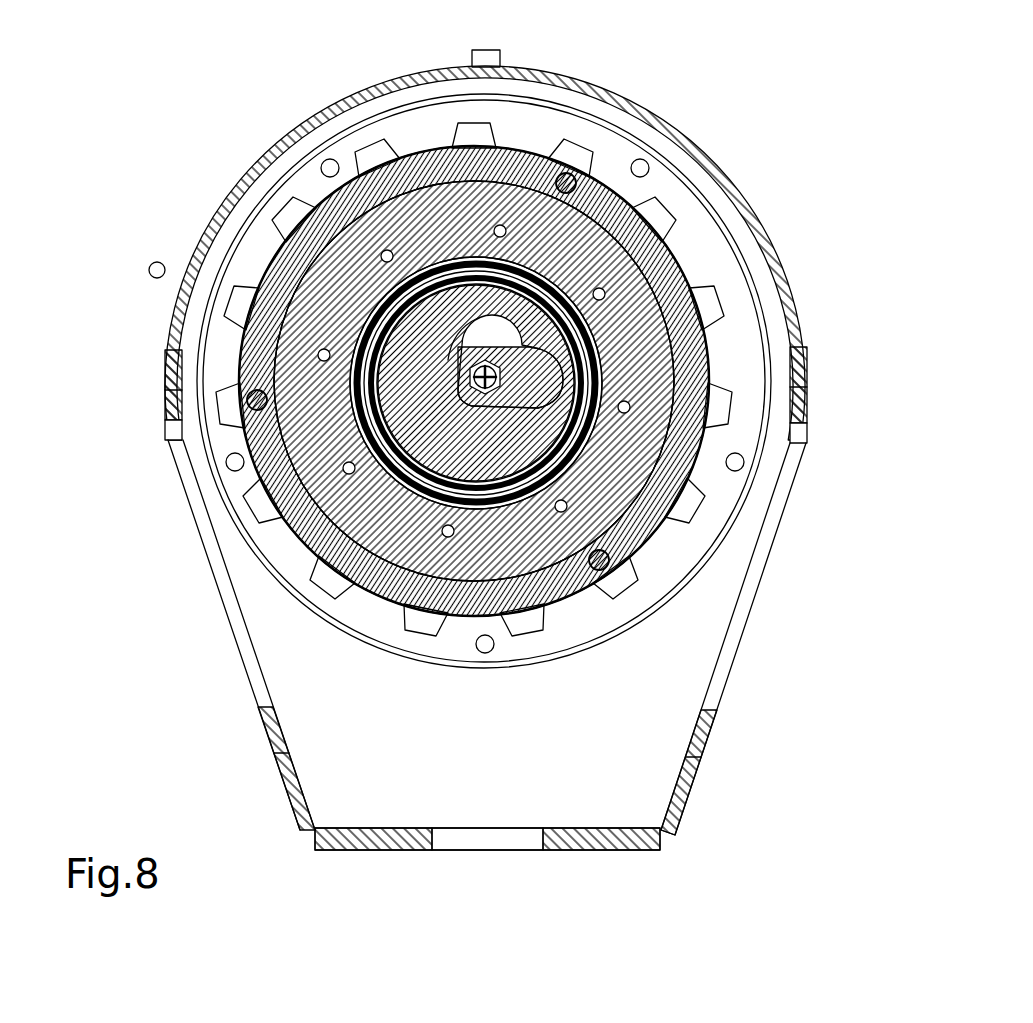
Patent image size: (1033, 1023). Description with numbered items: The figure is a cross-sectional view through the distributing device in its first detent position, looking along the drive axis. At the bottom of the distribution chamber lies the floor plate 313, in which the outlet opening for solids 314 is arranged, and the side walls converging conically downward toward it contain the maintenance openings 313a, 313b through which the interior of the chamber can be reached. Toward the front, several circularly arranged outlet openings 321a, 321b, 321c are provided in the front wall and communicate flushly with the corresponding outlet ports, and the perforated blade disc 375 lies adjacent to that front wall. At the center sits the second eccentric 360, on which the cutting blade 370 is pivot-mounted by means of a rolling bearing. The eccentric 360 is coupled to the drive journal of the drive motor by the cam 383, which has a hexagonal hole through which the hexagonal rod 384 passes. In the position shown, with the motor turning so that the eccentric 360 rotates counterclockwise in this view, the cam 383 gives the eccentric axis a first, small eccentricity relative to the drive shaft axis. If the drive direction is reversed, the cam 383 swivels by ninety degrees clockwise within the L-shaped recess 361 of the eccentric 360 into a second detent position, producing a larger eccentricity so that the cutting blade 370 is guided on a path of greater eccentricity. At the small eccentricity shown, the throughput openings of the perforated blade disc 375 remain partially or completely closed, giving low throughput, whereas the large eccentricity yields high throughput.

The cutting blade 370 is at (512, 165).
The cam 383 is at (497, 312).
The L-shaped recess 361 is at (482, 350).
The hexagonal rod 384 is at (479, 332).
The second eccentric 360 is at (412, 402).
The perforated blade disc 375 is at (703, 247).
The outlet opening 321a is at (712, 306).
The outlet opening 321b is at (721, 405).
The pin 321c is at (705, 478).
The floor plate 313 is at (366, 840).
The maintenance opening 313a is at (238, 646).
The maintenance opening 313b is at (735, 641).
The outlet opening for solids 314 is at (503, 832).